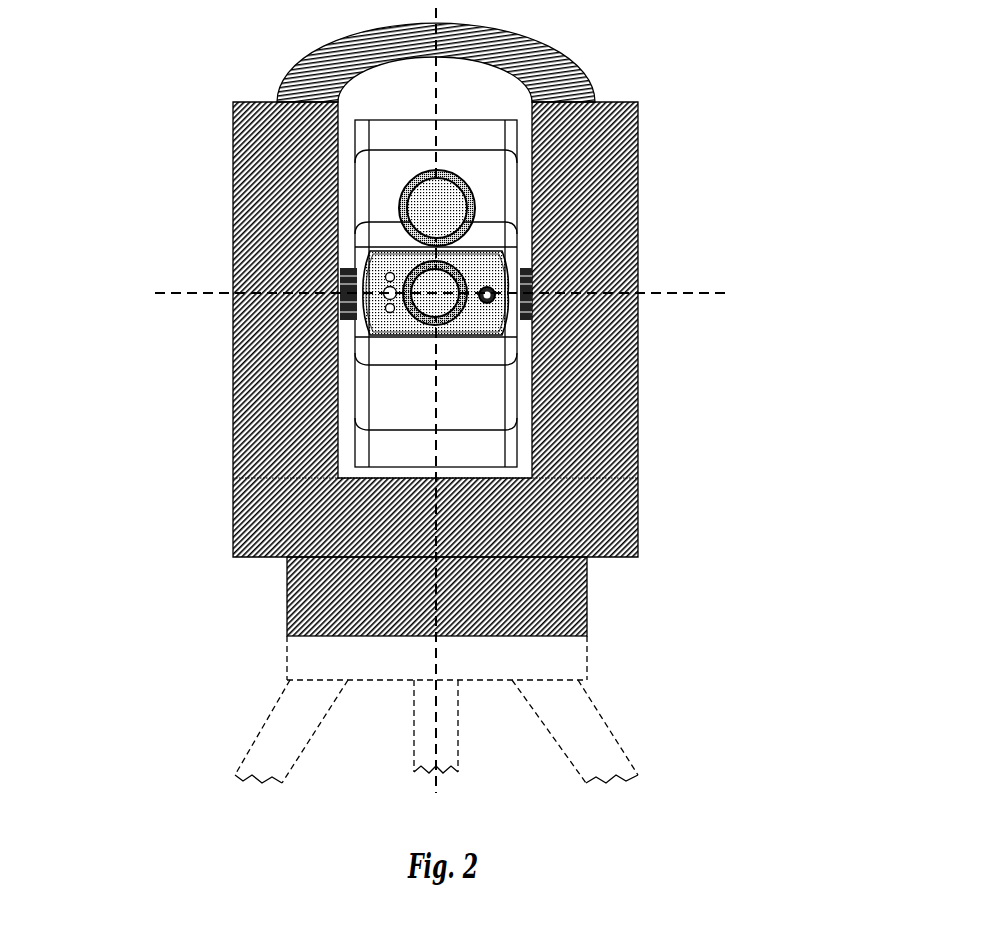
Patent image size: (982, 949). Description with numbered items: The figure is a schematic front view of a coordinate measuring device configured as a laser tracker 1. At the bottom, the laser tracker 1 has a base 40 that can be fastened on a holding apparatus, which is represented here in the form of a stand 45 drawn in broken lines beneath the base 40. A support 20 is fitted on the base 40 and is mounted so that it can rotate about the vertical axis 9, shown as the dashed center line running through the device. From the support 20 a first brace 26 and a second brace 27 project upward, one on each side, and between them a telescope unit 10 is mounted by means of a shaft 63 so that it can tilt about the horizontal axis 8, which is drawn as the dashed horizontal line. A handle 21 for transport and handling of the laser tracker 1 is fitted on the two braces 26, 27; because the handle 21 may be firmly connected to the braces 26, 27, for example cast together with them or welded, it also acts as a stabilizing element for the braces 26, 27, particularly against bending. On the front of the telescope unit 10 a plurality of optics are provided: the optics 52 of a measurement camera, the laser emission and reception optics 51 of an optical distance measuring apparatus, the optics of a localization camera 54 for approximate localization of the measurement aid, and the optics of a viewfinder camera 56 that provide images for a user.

The laser tracker 1 is at (197, 83).
The horizontal axis 8 is at (665, 295).
The vertical axis 9 is at (436, 512).
The telescope unit 10 is at (385, 166).
The support 20 is at (566, 518).
The handle 21 is at (567, 70).
The first brace 26 is at (262, 175).
The second brace 27 is at (603, 175).
The base 40 is at (566, 608).
The stand 45 is at (298, 667).
The laser emission and reception optics 51 is at (423, 302).
The optics of a measurement camera 52 is at (422, 212).
The localization camera 54 is at (390, 293).
The viewfinder camera 56 is at (490, 298).
The shaft 63 is at (520, 280).